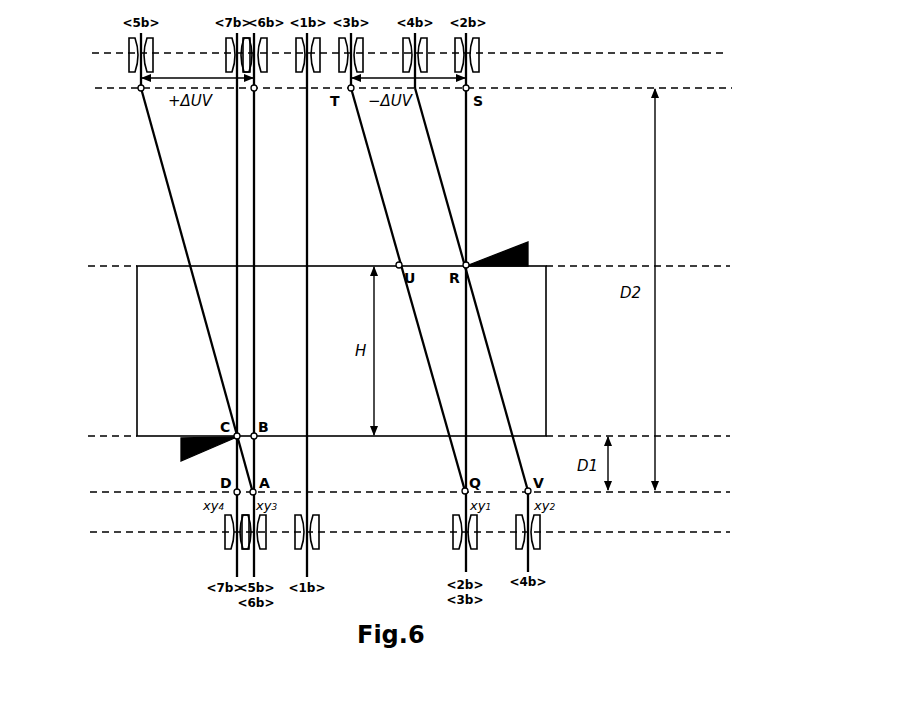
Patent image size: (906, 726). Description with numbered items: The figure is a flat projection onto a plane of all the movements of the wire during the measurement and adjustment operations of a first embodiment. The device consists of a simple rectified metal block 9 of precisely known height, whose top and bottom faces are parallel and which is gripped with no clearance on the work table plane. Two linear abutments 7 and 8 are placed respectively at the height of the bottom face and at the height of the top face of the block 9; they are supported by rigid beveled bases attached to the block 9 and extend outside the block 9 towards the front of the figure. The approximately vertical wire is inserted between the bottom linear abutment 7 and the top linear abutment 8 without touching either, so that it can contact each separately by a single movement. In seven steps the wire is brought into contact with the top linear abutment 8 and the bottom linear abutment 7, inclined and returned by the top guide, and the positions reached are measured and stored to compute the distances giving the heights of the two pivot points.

The bottom linear abutment 7 is at (181, 452).
The top linear abutment 8 is at (512, 244).
The rectified metal block 9 is at (137, 383).